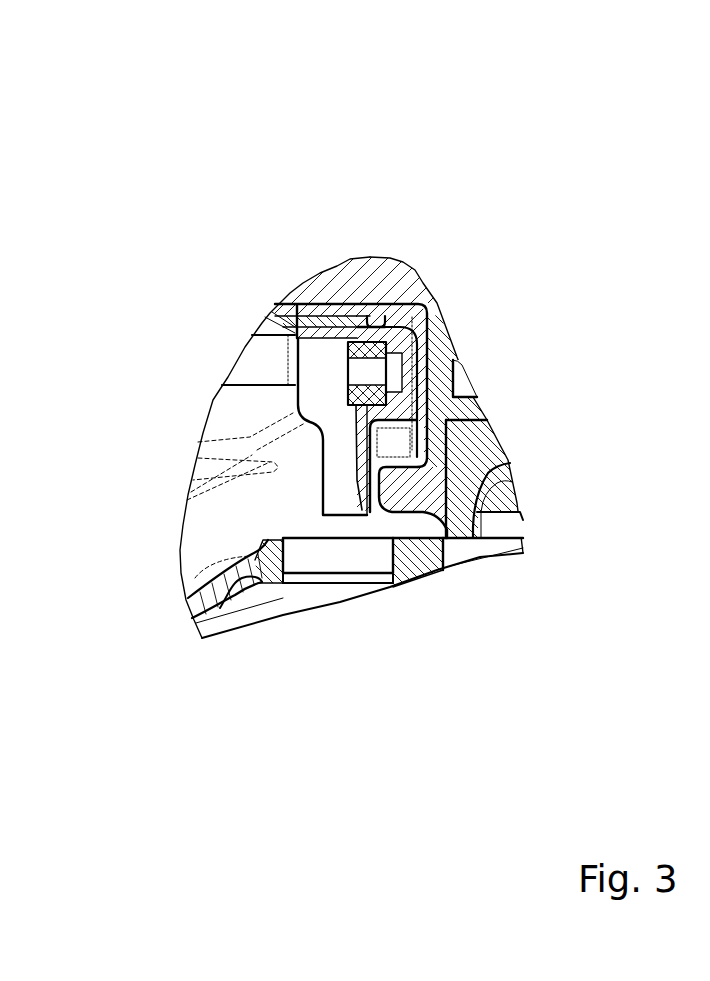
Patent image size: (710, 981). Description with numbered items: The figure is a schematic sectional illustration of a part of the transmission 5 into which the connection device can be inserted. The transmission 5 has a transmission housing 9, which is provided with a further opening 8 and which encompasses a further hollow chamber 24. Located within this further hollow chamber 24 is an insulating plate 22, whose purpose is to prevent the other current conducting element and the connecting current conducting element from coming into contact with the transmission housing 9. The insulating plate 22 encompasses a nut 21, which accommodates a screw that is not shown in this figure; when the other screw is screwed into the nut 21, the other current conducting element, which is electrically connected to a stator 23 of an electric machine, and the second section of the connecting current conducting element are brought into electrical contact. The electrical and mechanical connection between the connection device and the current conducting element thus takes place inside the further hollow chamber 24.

The transmission 5 is at (421, 212).
The further opening 8 is at (327, 560).
The transmission housing 9 is at (420, 560).
The nut 21 is at (360, 306).
The insulating plate 22 is at (413, 350).
The stator 23 is at (263, 352).
The further hollow chamber 24 is at (220, 517).